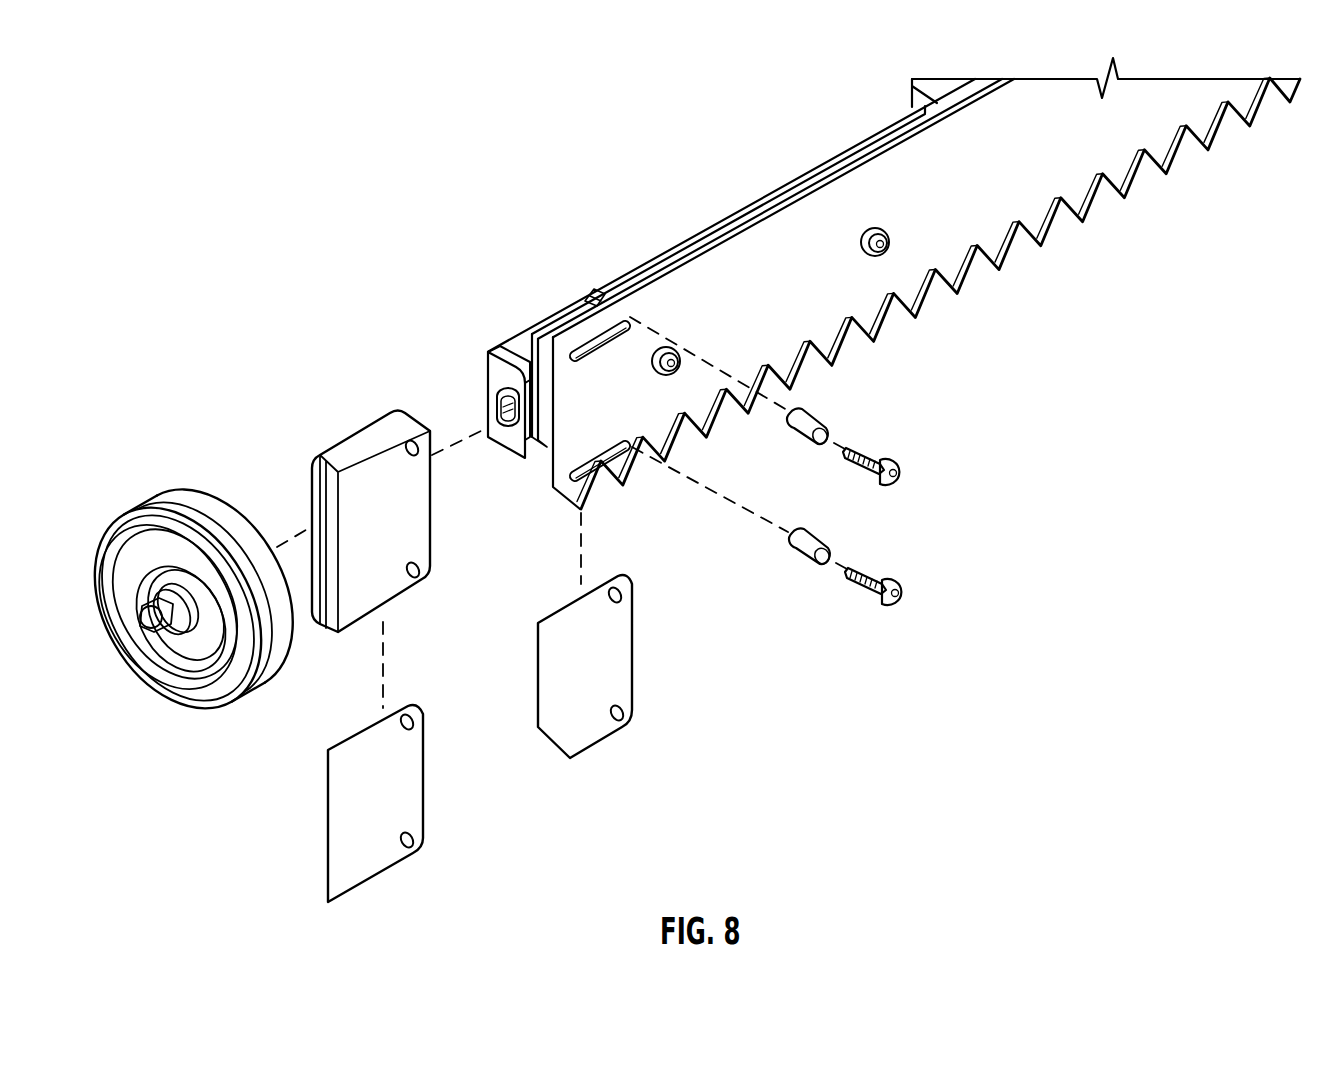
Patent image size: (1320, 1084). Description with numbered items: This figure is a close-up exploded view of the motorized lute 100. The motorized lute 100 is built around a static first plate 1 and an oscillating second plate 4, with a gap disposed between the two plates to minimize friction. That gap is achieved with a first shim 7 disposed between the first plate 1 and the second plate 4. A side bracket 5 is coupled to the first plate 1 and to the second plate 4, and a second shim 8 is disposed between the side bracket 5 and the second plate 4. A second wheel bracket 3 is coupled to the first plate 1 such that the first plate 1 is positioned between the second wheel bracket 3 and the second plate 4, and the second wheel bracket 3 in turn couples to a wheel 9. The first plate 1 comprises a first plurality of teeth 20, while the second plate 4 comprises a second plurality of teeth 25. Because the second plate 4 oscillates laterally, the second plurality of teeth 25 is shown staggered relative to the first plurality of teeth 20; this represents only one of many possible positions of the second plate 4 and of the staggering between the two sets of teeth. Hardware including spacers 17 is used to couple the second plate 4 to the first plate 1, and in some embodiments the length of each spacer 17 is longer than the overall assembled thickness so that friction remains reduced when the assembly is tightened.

The motorized lute 100 is at (310, 219).
The first plate 1 is at (708, 236).
The second wheel bracket 3 is at (517, 358).
The second plate 4 is at (814, 238).
The side bracket 5 is at (363, 433).
The first shim 7 is at (618, 662).
The second shim 8 is at (410, 790).
The wheel 9 is at (190, 497).
The spacers 17 is at (810, 419).
The first plurality of teeth 20 is at (968, 271).
The second plurality of teeth 25 is at (1168, 168).